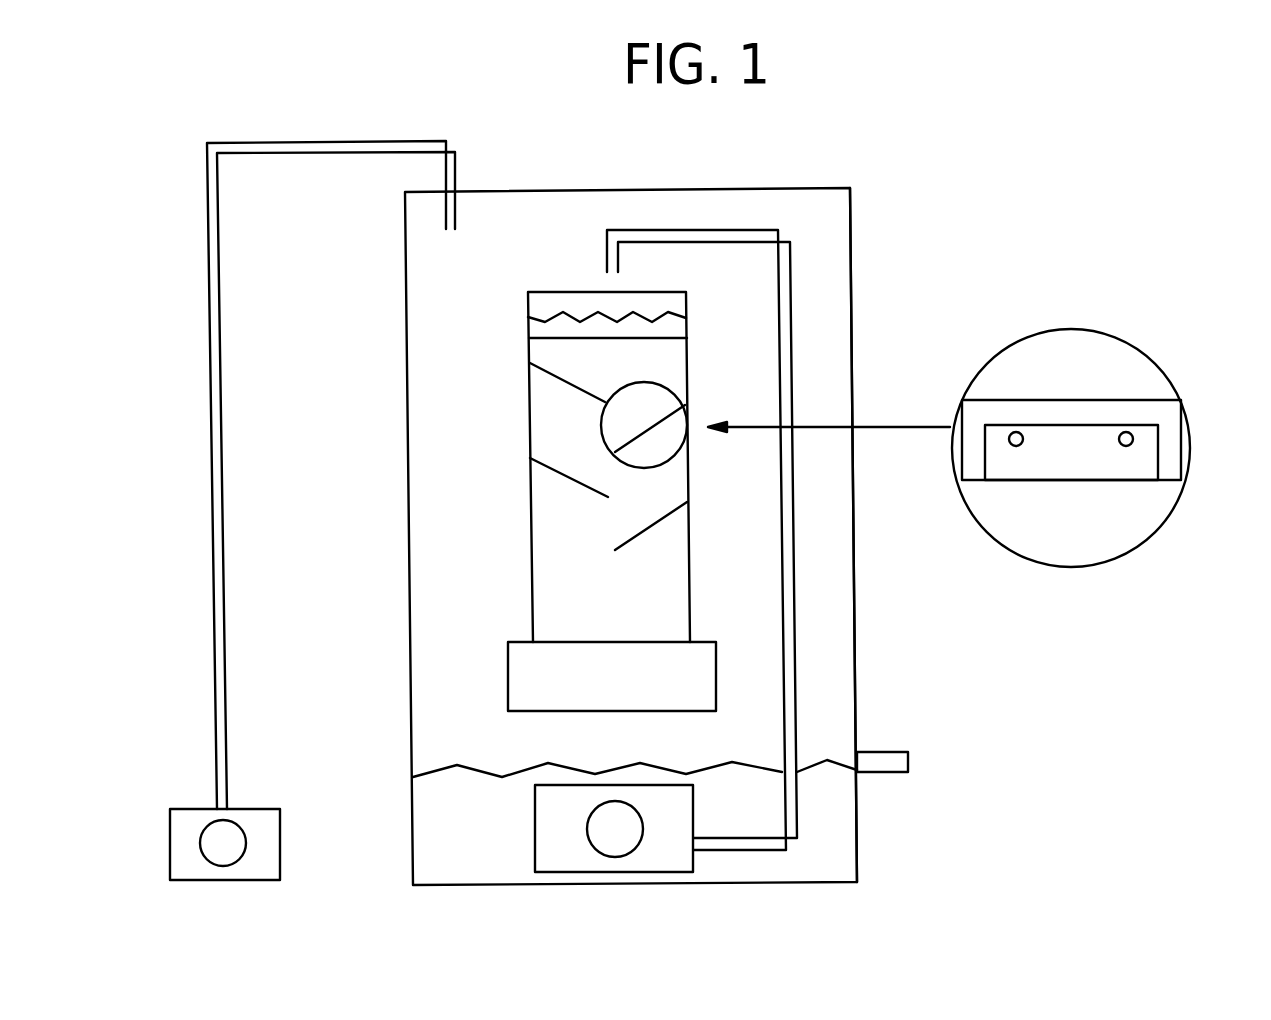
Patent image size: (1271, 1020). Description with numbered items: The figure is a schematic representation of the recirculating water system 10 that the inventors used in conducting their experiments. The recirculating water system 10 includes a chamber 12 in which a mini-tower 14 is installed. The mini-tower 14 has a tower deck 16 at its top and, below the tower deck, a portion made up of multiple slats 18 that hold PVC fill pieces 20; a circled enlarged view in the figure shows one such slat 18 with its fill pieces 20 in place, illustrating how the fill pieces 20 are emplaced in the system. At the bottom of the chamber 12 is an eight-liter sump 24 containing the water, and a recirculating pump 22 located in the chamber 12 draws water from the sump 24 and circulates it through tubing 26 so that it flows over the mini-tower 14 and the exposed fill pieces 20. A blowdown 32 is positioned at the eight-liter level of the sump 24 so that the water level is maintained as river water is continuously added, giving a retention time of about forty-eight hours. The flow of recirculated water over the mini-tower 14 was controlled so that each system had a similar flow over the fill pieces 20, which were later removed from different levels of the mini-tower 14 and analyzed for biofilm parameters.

The recirculating water system 10 is at (857, 231).
The chamber 12 is at (851, 278).
The mini-tower 14 is at (735, 683).
The tower deck 16 is at (709, 310).
The slats 18 is at (582, 388).
The PVC fill pieces 20 is at (163, 848).
The recirculating pump 22 is at (715, 862).
The sump 24 is at (827, 834).
The tubing 26 is at (791, 645).
The blowdown 32 is at (920, 760).